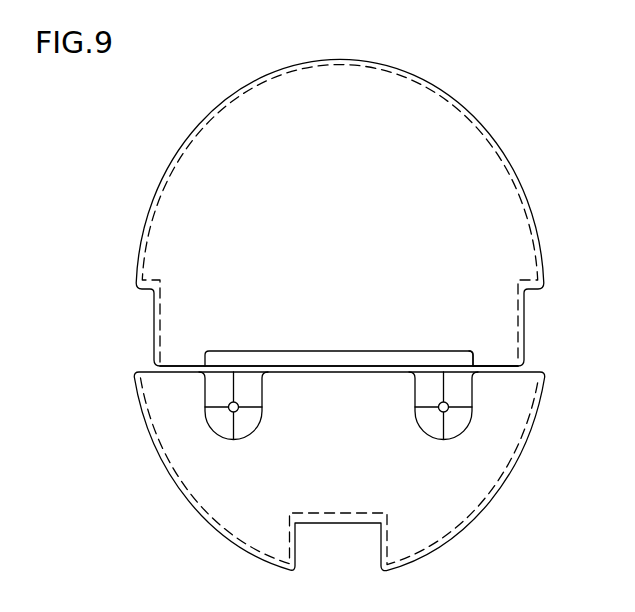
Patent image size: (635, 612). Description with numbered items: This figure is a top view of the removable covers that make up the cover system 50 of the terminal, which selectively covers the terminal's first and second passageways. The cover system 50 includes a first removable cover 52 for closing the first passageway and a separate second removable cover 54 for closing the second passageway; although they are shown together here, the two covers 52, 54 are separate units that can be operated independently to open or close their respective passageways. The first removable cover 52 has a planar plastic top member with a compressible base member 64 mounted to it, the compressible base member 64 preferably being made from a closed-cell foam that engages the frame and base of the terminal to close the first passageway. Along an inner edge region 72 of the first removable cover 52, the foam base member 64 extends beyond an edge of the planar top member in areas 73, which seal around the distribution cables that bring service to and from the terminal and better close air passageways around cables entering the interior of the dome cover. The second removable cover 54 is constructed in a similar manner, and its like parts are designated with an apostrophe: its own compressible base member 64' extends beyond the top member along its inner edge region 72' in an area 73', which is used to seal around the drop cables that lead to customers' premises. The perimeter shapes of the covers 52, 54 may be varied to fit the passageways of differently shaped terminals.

The cover system 50 is at (88, 319).
The first removable cover 52 is at (443, 543).
The second removable cover 54 is at (526, 193).
The compressible base member 64 is at (353, 471).
The compressible base member 64' is at (339, 208).
The inner edge region 72 is at (339, 411).
The inner edge region 72' is at (339, 324).
The areas 73 is at (338, 426).
The area 73' is at (511, 339).